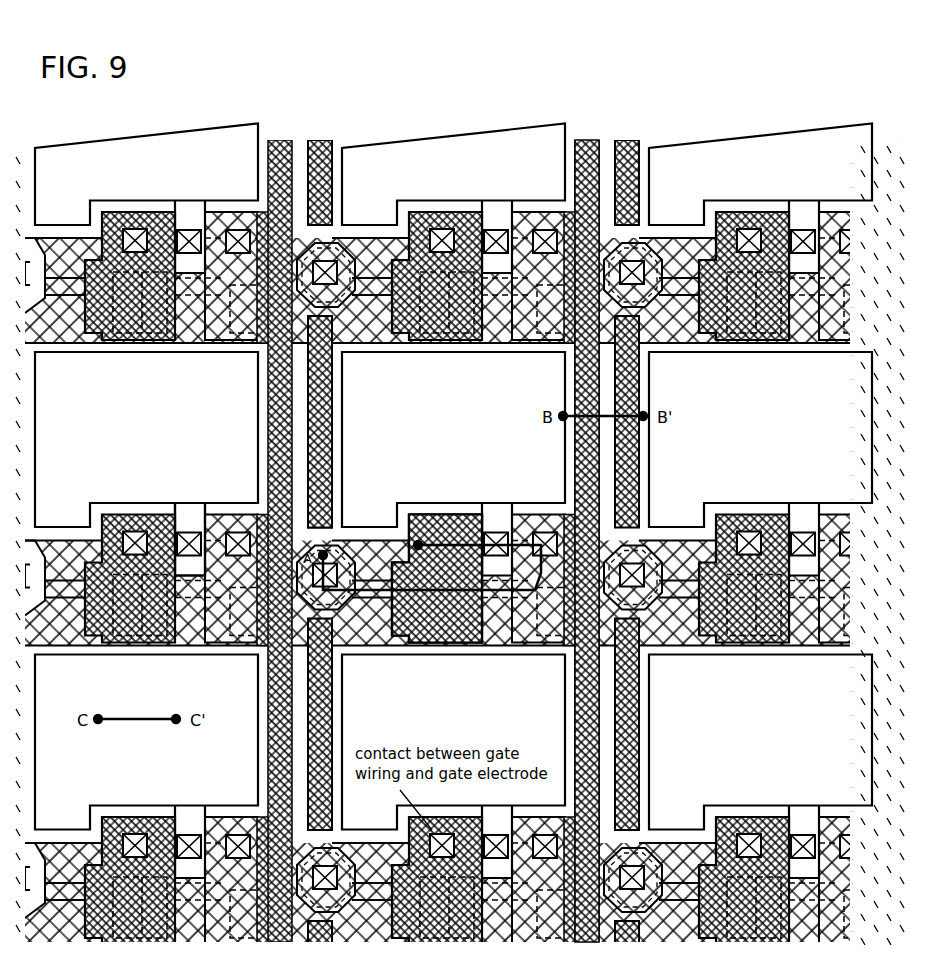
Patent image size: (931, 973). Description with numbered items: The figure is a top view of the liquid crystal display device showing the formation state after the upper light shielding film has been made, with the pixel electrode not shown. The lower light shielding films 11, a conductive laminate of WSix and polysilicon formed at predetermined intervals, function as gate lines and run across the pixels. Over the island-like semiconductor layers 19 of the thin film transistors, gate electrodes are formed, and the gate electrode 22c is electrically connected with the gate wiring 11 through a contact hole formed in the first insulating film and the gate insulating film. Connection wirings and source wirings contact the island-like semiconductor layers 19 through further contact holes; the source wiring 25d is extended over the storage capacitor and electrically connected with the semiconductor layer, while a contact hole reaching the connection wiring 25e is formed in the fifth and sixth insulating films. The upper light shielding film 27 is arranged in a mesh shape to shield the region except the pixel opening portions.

The lower light shielding film 11 is at (352, 358).
The upper light shielding film 27 is at (336, 438).
The gate electrode 22c is at (427, 517).
The island-like semiconductor layer 19 is at (211, 508).
The connection wiring 25e is at (430, 648).
The source wiring 25d is at (597, 680).